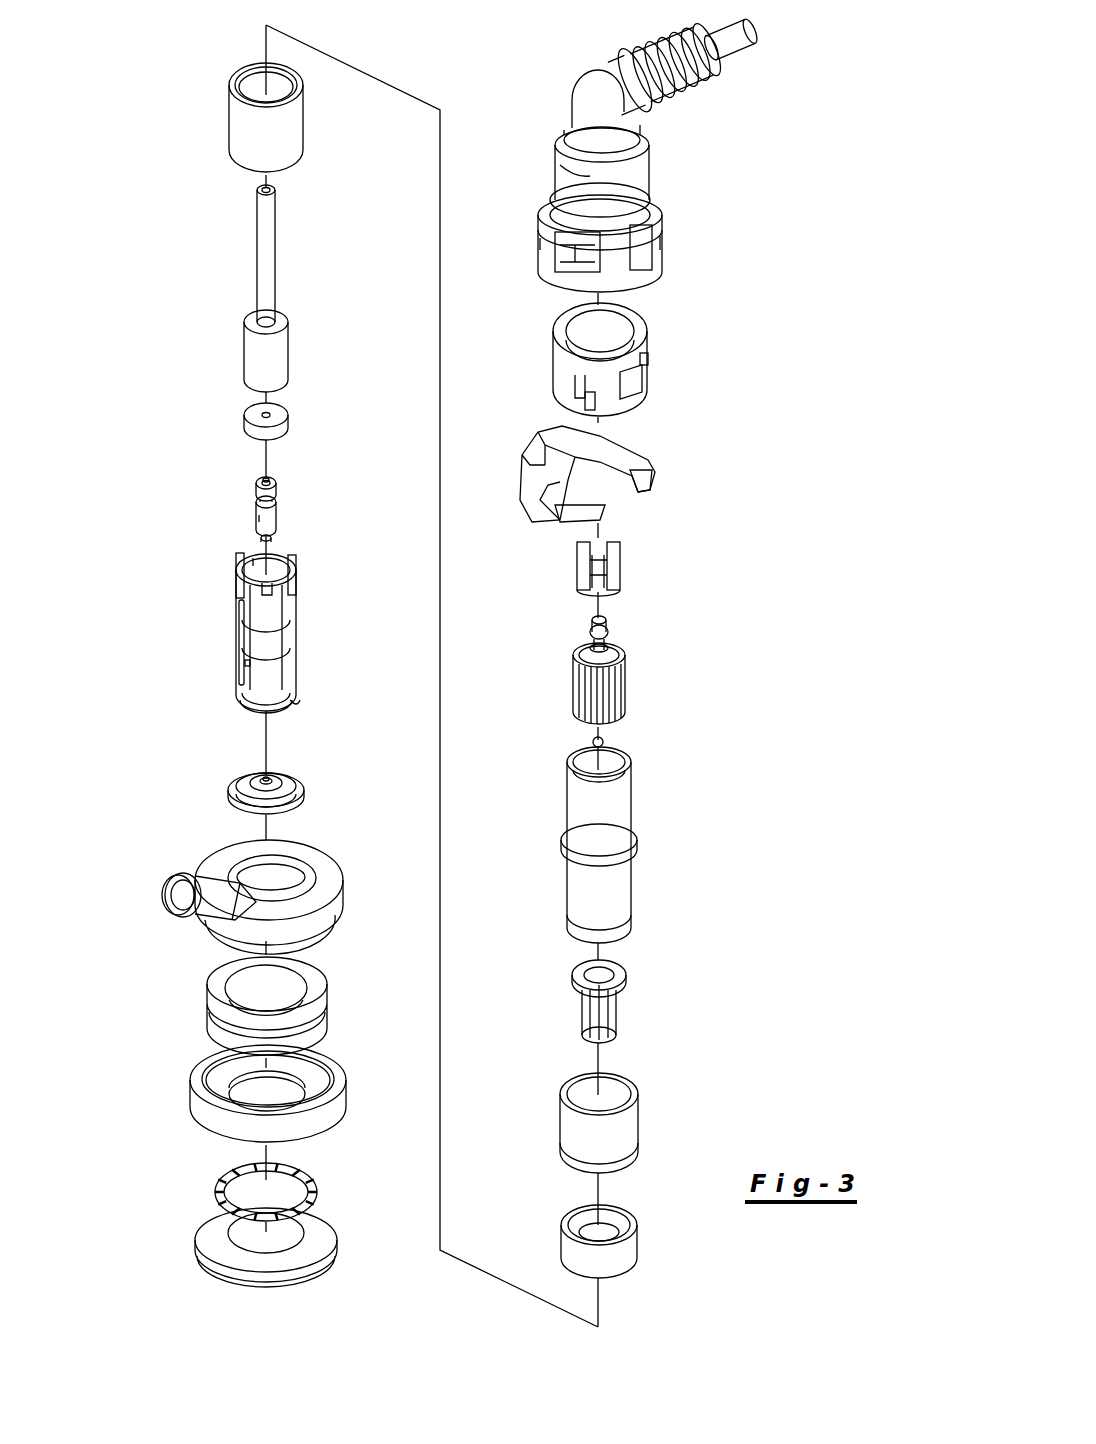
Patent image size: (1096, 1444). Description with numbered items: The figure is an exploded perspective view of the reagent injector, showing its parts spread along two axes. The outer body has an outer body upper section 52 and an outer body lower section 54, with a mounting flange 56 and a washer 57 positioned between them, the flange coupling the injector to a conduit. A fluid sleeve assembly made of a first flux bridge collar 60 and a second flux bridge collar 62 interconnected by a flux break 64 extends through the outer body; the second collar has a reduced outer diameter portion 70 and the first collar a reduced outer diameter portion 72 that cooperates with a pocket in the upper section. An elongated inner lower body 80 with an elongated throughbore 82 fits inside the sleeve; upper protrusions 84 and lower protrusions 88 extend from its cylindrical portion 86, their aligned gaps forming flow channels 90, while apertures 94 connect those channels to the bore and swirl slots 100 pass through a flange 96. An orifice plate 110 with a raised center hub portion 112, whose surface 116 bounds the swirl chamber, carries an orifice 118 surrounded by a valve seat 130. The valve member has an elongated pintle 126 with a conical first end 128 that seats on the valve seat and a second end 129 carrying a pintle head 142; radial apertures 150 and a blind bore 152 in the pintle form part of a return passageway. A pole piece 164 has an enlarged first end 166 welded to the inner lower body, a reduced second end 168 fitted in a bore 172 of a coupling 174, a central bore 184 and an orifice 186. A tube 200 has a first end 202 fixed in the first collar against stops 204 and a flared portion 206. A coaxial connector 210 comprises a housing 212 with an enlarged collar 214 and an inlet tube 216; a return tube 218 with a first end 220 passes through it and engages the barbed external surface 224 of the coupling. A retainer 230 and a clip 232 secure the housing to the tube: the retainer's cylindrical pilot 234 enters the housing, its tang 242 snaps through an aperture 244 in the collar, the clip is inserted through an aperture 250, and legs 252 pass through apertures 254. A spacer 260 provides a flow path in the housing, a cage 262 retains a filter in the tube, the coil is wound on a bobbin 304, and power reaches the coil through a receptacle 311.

The outer body upper section 52 is at (261, 897).
The outer body lower section 54 is at (210, 1113).
The mounting flange 56 is at (210, 1248).
The washer 57 is at (219, 1190).
The first flux bridge collar 60 is at (636, 1126).
The second flux bridge collar 62 is at (222, 117).
The flux break 64 is at (628, 1253).
The reduced outer diameter portion 70 is at (258, 103).
The reduced outer diameter portion 72 is at (635, 1150).
The elongated inner lower body 80 is at (247, 623).
The elongated throughbore 82 is at (253, 563).
The upper protrusions 84 is at (235, 573).
The cylindrical portion 86 is at (287, 617).
The lower protrusions 88 is at (238, 650).
The flow channels 90 is at (243, 602).
The apertures 94 is at (247, 668).
The flange 96 is at (288, 707).
The swirl slots 100 is at (253, 688).
The orifice plate 110 is at (251, 774).
The raised center hub portion 112 is at (282, 784).
The surface 116 is at (265, 792).
The orifice 118 is at (272, 779).
The elongated pintle 126 is at (270, 500).
The first end 128 is at (277, 543).
The second end 129 is at (275, 485).
The valve seat 130 is at (263, 775).
The pintle head 142 is at (280, 428).
The apertures 150 is at (280, 512).
The blind bore 152 is at (263, 478).
The pole piece 164 is at (252, 273).
The enlarged diameter first end 166 is at (247, 382).
The reduced diameter second end 168 is at (313, 238).
The bore 172 is at (605, 622).
The coupling 174 is at (622, 658).
The central bore 184 is at (272, 187).
The orifice 186 is at (593, 741).
The tube 200 is at (652, 854).
The first end 202 is at (618, 923).
The stops 204 is at (635, 847).
The radially outwardly flared portion 206 is at (625, 773).
The coaxial connector 210 is at (650, 146).
The housing 212 is at (583, 163).
The enlarged collar 214 is at (557, 272).
The inlet tube 216 is at (677, 63).
The return tube 218 is at (728, 40).
The first end 220 is at (749, 31).
The barbed external surface 224 is at (615, 622).
The retainer 230 is at (608, 368).
The clip 232 is at (624, 465).
The cylindrical pilot 234 is at (560, 330).
The tang 242 is at (647, 373).
The aperture 244 is at (652, 265).
The aperture 250 is at (540, 232).
The legs 252 is at (650, 468).
The apertures 254 is at (648, 357).
The spacer 260 is at (618, 567).
The cage 262 is at (622, 1013).
The bobbin 304 is at (219, 984).
The receptacle 311 is at (165, 895).